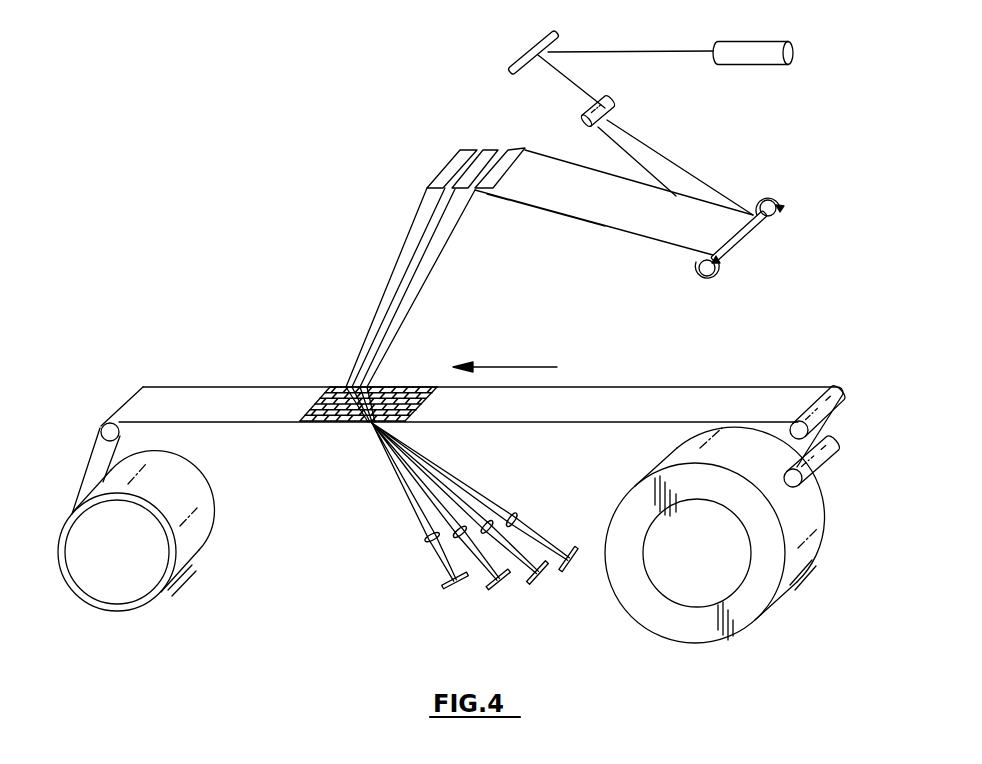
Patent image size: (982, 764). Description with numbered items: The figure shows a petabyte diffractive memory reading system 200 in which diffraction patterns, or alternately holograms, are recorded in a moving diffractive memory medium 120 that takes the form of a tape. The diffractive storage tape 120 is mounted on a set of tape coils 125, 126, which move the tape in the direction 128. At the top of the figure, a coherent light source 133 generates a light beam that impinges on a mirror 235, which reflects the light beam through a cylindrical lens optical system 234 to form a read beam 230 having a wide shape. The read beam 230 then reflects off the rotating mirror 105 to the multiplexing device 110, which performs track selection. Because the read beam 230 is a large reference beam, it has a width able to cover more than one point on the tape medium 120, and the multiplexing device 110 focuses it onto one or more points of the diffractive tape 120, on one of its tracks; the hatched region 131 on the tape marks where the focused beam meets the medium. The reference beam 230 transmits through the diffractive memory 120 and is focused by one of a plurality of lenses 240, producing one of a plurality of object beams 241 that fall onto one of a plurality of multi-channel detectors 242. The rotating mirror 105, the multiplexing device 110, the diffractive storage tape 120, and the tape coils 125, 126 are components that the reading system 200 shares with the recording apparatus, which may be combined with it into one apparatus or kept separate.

The diffractive memory reading system 200 is at (219, 240).
The multiplexing device 110 is at (442, 172).
The read beam 230 is at (693, 178).
The mirror 235 is at (531, 48).
The coherent light source 133 is at (762, 41).
The cylindrical lens optical system 234 is at (582, 108).
The rotating mirror 105 is at (748, 230).
The direction 128 is at (520, 367).
The diffractive memory medium 120 is at (652, 400).
The exposed region 131 is at (335, 425).
The tape coil 125 is at (125, 597).
The tape coil 126 is at (698, 627).
The lenses 240 is at (520, 513).
The object beams 241 is at (547, 542).
The multi-channel detectors 242 is at (566, 577).